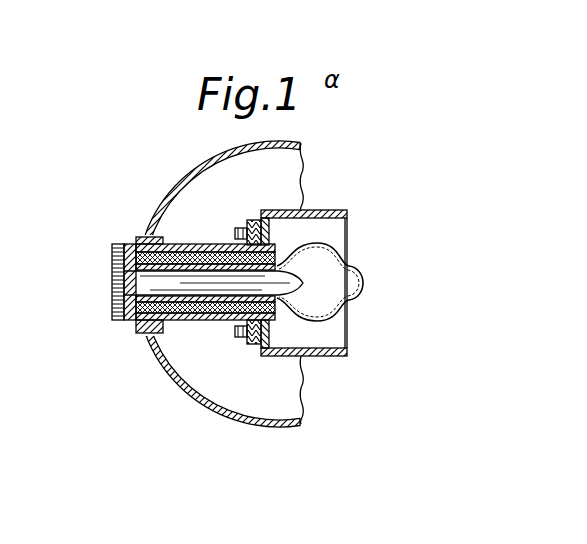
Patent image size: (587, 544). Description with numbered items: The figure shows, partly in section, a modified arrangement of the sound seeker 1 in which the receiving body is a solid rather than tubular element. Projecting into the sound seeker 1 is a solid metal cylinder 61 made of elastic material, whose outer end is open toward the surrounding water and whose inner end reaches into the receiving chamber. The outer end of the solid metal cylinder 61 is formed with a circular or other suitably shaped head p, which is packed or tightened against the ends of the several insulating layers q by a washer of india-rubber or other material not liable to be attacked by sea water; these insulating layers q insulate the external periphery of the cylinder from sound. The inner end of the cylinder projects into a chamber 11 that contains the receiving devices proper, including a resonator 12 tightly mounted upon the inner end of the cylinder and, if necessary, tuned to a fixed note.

The sound seeker 1 is at (272, 403).
The head p is at (110, 262).
The insulating layers q is at (202, 242).
The solid metal cylinder 61 is at (199, 321).
The chamber 11 is at (313, 228).
The resonator 12 is at (333, 311).